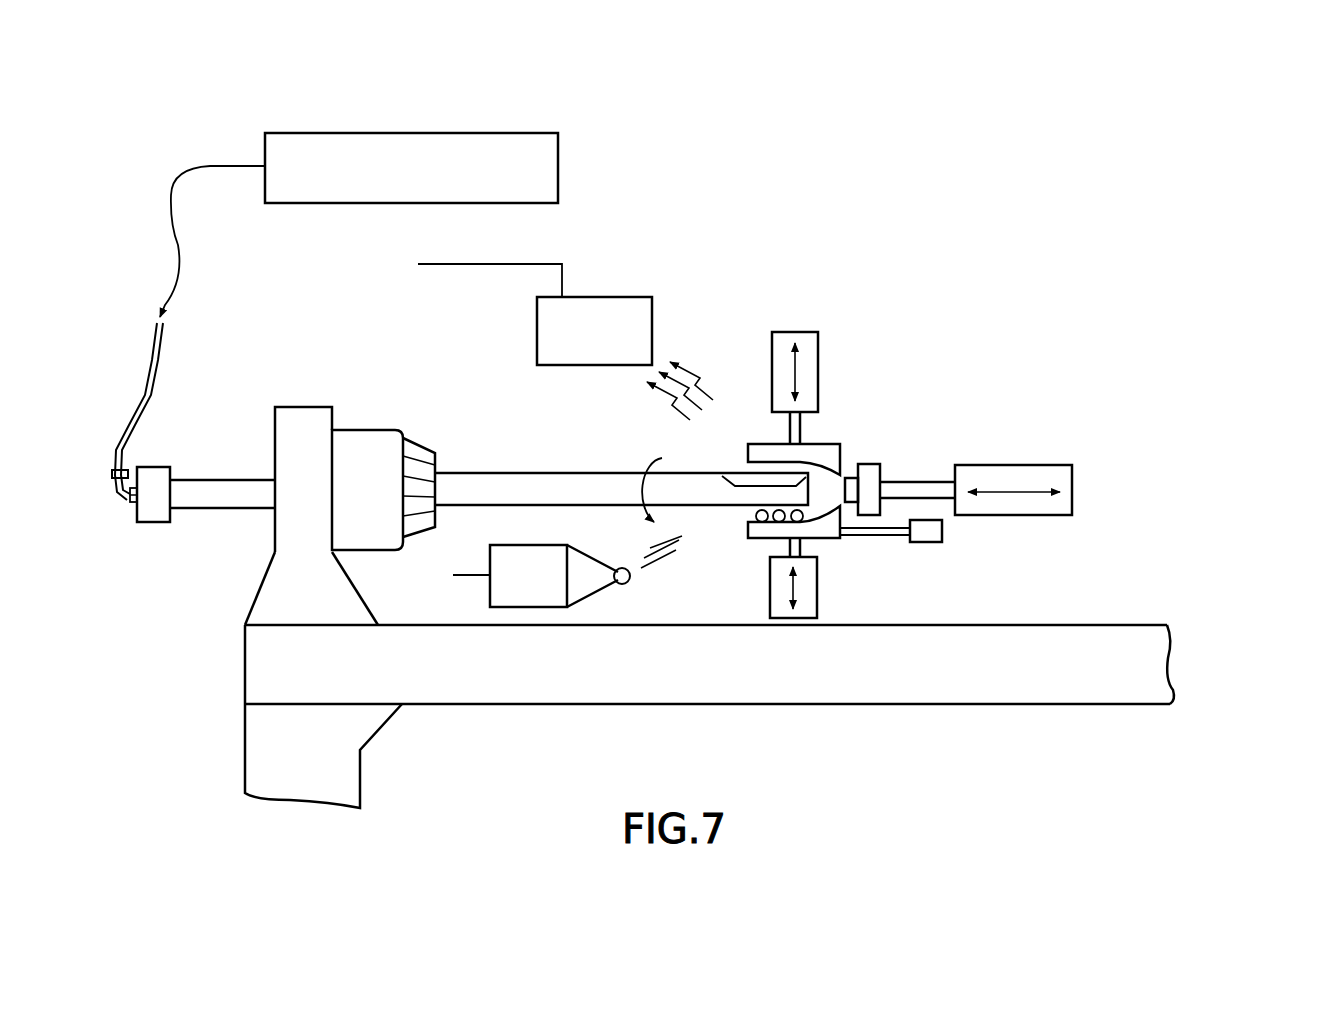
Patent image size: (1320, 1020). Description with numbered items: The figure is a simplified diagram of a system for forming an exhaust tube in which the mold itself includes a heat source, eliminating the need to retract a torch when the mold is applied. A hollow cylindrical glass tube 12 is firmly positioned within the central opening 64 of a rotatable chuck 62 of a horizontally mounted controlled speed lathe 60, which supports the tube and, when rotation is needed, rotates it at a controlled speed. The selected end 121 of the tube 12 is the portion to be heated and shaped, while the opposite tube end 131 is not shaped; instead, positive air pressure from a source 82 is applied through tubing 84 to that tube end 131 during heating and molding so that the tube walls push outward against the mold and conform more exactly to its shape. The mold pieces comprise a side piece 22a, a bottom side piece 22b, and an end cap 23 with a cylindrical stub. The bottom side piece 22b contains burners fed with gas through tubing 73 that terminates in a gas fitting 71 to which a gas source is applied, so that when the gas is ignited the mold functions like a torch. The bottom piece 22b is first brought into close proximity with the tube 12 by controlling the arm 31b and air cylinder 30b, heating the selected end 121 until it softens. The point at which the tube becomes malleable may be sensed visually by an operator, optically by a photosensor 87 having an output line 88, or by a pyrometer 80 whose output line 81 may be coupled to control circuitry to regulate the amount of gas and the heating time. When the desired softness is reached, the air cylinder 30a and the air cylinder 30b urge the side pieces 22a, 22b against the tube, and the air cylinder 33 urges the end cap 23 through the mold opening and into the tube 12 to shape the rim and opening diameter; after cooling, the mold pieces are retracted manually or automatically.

The positive air pressure source 82 is at (378, 133).
The tubing 84 is at (160, 375).
The tube end 131 is at (172, 484).
The controlled speed lathe 60 is at (237, 557).
The rotatable chuck 62 is at (368, 430).
The central opening 64 is at (438, 477).
The glass tube 12 is at (527, 473).
The selected end 121 is at (768, 488).
The output line 88 is at (478, 264).
The photosensor 87 is at (630, 297).
The pyrometer 80 is at (500, 562).
The output line 81 is at (468, 577).
The air cylinder 30a is at (818, 338).
The side piece 22a is at (830, 447).
The side piece 22b is at (830, 533).
The arm 31b is at (778, 542).
The air cylinder 30b is at (818, 602).
The end cap 23 is at (873, 464).
The air cylinder 33 is at (1063, 515).
The tubing 73 is at (884, 538).
The gas fitting 71 is at (940, 542).